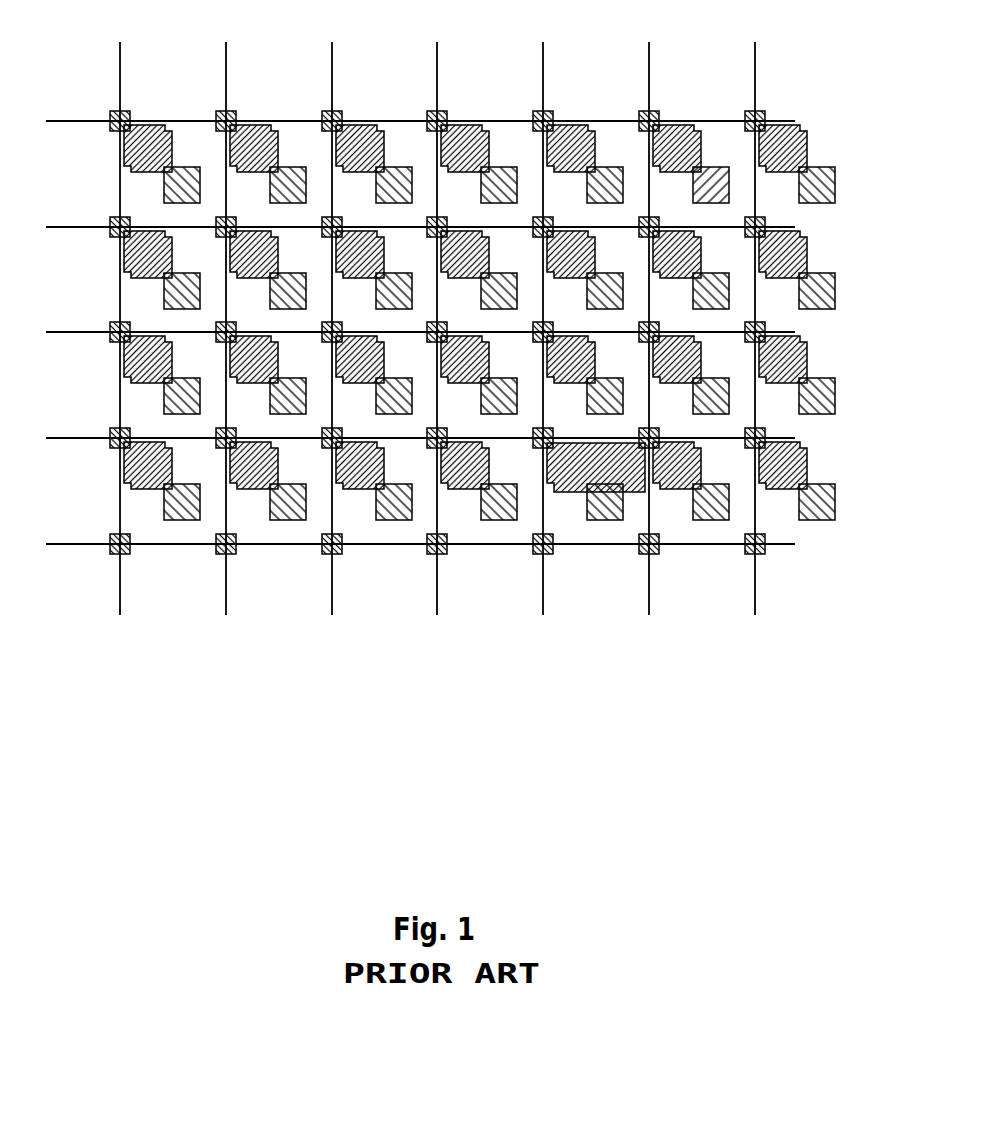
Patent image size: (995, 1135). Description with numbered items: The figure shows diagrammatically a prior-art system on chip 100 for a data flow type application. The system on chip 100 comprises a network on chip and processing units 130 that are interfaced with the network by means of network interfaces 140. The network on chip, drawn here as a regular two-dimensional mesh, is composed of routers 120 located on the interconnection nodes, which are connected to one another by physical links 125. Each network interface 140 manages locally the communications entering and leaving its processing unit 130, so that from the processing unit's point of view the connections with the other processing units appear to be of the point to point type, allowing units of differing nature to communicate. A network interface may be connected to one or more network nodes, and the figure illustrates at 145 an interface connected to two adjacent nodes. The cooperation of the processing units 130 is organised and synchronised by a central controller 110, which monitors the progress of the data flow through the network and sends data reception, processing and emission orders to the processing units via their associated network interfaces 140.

The system on chip 100 is at (767, 617).
The central controller 110 is at (712, 164).
The router 120 is at (217, 555).
The physical link 125 is at (702, 547).
The processing unit 130 is at (480, 516).
The network interface 140 is at (342, 487).
The network interface connected to two adjacent nodes 145 is at (580, 481).